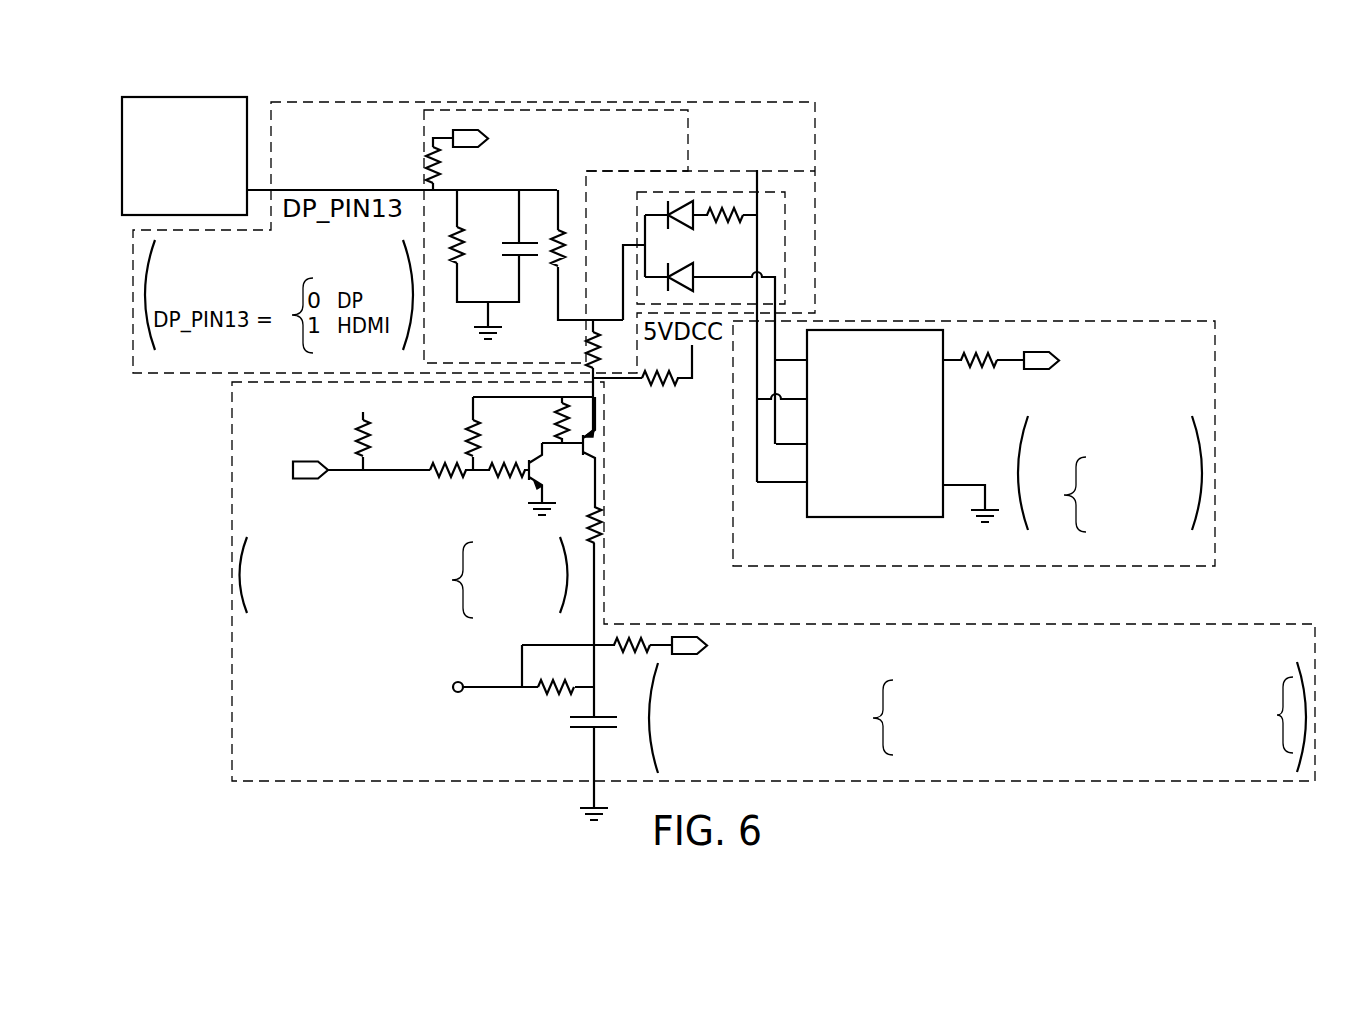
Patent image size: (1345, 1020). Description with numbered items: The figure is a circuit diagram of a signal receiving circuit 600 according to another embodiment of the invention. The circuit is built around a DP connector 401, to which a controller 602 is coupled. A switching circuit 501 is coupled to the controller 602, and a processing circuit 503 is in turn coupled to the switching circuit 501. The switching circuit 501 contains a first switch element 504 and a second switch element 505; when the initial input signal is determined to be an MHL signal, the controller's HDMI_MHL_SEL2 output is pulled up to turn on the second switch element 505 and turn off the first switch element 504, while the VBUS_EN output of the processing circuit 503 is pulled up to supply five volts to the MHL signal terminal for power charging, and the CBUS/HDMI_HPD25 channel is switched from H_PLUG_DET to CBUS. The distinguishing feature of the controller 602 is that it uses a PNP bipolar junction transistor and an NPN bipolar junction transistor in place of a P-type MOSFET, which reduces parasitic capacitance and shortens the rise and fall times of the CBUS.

The signal receiving circuit 600 is at (1136, 167).
The DP connector 401 is at (165, 96).
The first switch element 504 is at (567, 110).
The switching circuit 501 is at (816, 172).
The second switch element 505 is at (786, 236).
The processing circuit 503 is at (1023, 320).
The controller 602 is at (606, 510).